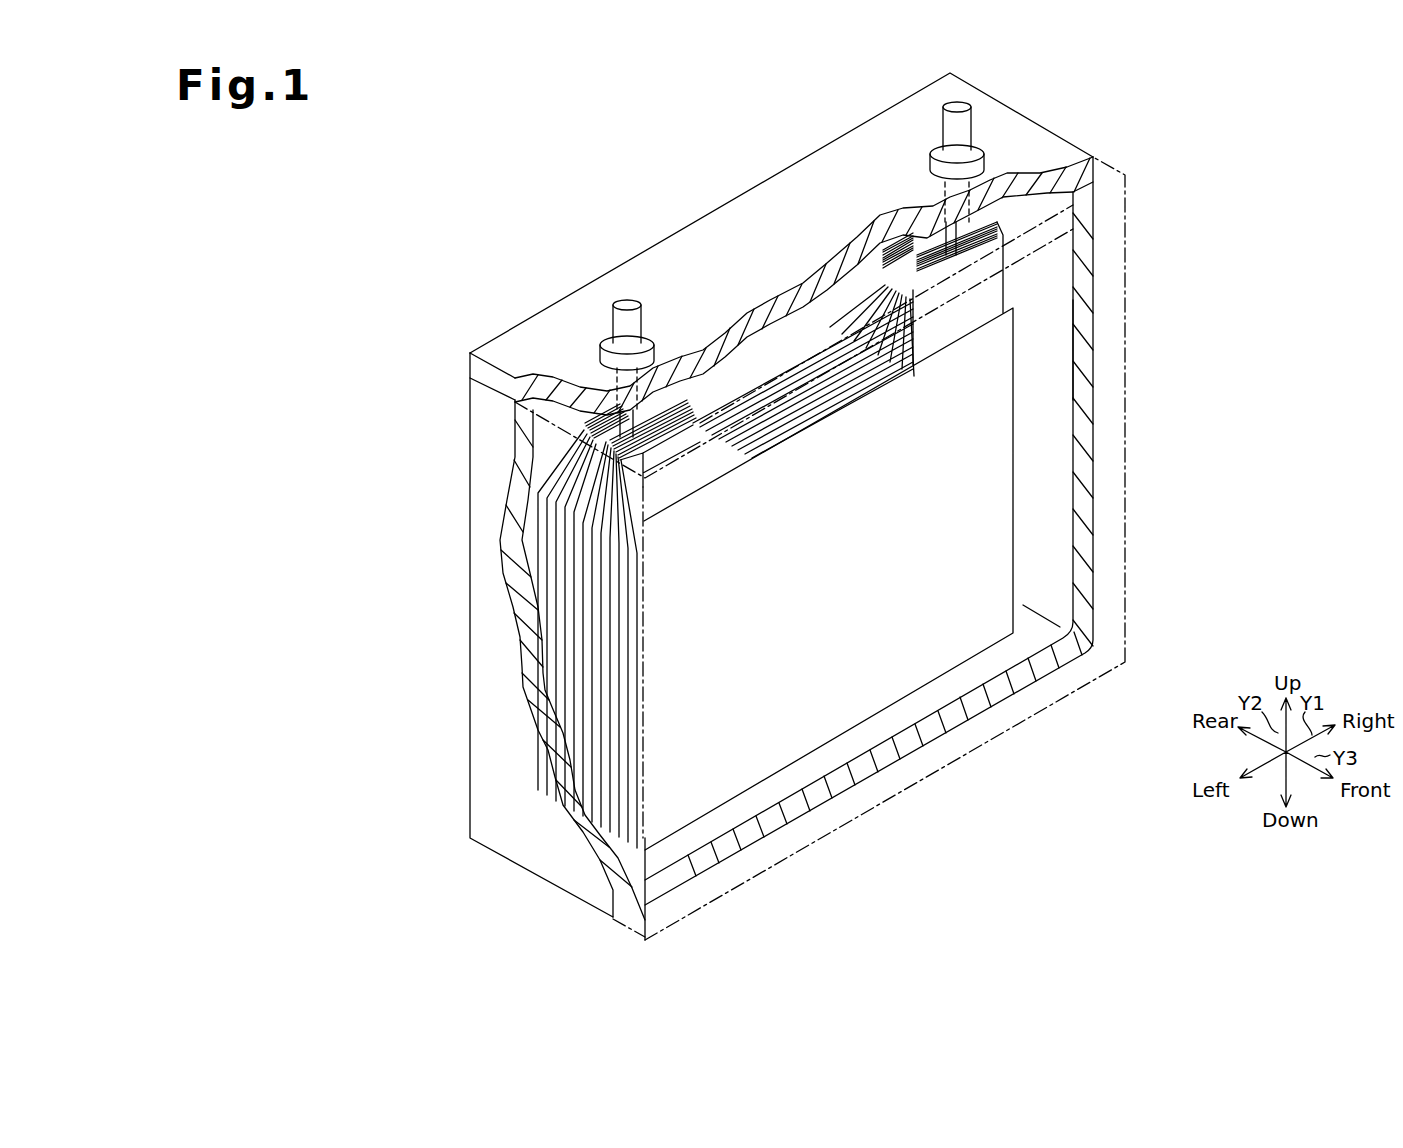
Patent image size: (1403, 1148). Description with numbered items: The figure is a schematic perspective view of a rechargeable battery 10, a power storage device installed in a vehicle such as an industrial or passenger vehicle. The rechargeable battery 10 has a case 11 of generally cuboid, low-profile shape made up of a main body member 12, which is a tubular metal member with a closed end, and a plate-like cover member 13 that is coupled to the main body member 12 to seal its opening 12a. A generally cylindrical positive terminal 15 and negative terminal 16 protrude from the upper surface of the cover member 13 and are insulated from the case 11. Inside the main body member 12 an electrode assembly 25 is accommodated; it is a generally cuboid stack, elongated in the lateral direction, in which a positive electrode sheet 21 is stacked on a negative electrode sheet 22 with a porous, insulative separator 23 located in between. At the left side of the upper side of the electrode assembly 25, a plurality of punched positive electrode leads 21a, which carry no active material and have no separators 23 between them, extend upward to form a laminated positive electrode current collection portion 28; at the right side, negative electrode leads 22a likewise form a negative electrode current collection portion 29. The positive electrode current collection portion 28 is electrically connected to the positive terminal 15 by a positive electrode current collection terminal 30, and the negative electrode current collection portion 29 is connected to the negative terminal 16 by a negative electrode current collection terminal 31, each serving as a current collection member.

The rechargeable battery 10 is at (820, 506).
The case 11 is at (770, 506).
The main body member 12 is at (475, 398).
The opening 12a is at (1047, 203).
The cover member 13 is at (470, 362).
The positive terminal 15 is at (627, 300).
The negative terminal 16 is at (950, 107).
The positive electrode sheet 21 is at (932, 558).
The positive electrode lead 21a is at (932, 558).
The negative electrode sheet 22 is at (932, 561).
The negative electrode lead 22a is at (932, 561).
The separator 23 is at (726, 478).
The electrode assembly 25 is at (914, 536).
The positive electrode current collection portion 28 is at (743, 500).
The negative electrode current collection portion 29 is at (933, 390).
The positive electrode current collection terminal 30 is at (588, 400).
The negative electrode current collection terminal 31 is at (958, 226).